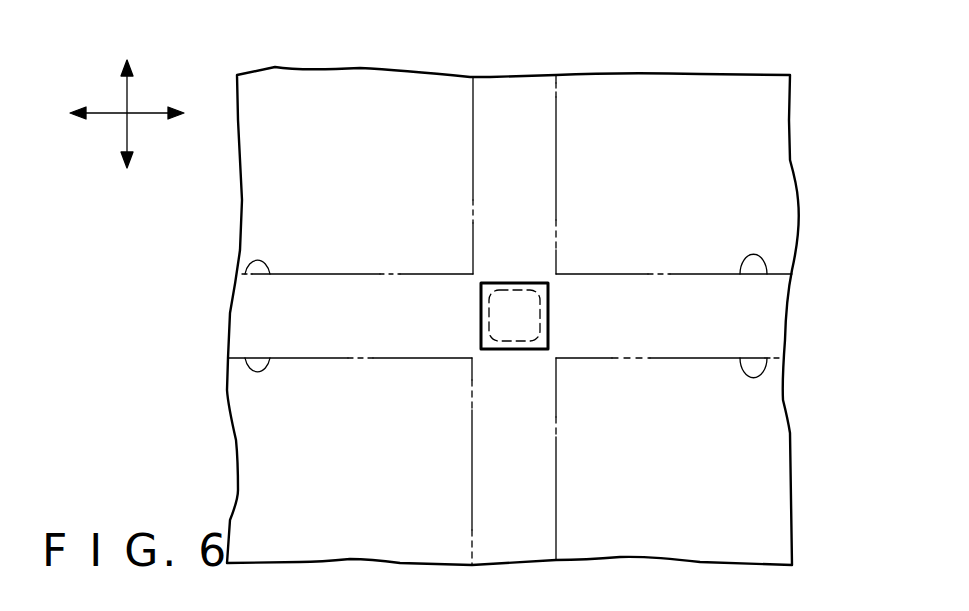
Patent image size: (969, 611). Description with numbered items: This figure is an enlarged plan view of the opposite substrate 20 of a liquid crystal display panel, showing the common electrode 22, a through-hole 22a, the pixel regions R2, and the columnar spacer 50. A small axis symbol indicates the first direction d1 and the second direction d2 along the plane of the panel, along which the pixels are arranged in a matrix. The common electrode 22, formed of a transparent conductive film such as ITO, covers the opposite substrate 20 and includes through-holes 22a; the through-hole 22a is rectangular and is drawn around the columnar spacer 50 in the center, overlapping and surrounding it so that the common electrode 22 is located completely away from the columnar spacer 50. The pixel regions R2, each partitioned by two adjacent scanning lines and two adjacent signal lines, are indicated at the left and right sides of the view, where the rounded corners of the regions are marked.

The opposite substrate 20 is at (532, 316).
The common electrode 22 is at (237, 466).
The through-hole 22a is at (489, 318).
The columnar spacer 50 is at (508, 316).
The pixel region R2 is at (247, 266).
The first direction d1 is at (101, 116).
The second direction d2 is at (130, 91).